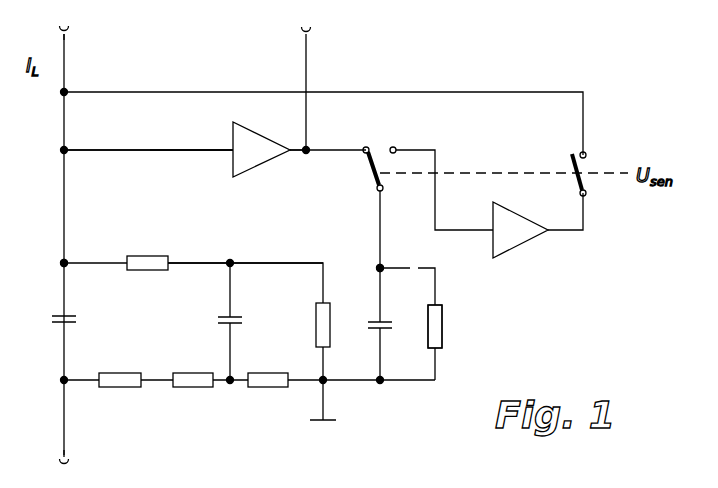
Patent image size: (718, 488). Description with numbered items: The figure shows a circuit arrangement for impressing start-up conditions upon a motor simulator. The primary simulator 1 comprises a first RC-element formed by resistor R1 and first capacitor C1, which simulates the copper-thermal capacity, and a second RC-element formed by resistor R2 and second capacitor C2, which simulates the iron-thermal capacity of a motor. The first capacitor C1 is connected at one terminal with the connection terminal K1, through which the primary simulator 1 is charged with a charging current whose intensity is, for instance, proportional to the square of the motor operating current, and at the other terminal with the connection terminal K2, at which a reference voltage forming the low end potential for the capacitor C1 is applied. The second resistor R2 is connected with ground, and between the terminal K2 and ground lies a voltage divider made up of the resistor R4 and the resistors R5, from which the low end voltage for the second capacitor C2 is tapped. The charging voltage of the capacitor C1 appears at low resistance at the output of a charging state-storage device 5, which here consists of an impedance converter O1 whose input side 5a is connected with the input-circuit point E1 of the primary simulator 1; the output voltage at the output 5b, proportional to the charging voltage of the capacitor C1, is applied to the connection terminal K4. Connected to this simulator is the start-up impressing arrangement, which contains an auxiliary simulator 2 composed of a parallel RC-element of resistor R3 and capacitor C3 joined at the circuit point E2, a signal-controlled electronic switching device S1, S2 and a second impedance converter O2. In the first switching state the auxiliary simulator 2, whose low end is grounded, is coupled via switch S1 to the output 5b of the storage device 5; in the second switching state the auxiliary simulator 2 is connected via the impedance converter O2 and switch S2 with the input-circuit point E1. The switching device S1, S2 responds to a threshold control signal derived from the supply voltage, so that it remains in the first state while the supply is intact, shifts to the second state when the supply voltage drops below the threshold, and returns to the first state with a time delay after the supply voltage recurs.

The primary simulator 1 is at (262, 264).
The auxiliary simulator 2 is at (446, 300).
The charging state-storage device 5 is at (222, 135).
The input side of charging state-storage device 5a is at (202, 152).
The output of charging state-storage device 5b is at (293, 153).
The impedance converter O1 is at (257, 143).
The impedance converter O2 is at (520, 242).
The electronic switching device S1 is at (369, 157).
The electronic switching device S2 is at (612, 150).
The connection terminal K1 is at (77, 34).
The connection terminal K2 is at (77, 463).
The connection terminal K4 is at (320, 86).
The input-circuit point E1 is at (47, 264).
The circuit point of the auxiliary simulator E2 is at (367, 259).
The first capacitor C1 is at (50, 321).
The second capacitor C2 is at (215, 322).
The capacitor of auxiliary simulator C3 is at (392, 315).
The first resistor R1 is at (147, 251).
The second resistor R2 is at (310, 325).
The resistor of auxiliary simulator R3 is at (452, 326).
The voltage divider resistor R4 is at (120, 397).
The voltage divider resistors R5 is at (230, 397).